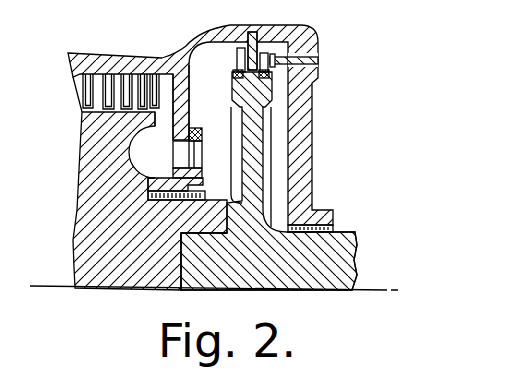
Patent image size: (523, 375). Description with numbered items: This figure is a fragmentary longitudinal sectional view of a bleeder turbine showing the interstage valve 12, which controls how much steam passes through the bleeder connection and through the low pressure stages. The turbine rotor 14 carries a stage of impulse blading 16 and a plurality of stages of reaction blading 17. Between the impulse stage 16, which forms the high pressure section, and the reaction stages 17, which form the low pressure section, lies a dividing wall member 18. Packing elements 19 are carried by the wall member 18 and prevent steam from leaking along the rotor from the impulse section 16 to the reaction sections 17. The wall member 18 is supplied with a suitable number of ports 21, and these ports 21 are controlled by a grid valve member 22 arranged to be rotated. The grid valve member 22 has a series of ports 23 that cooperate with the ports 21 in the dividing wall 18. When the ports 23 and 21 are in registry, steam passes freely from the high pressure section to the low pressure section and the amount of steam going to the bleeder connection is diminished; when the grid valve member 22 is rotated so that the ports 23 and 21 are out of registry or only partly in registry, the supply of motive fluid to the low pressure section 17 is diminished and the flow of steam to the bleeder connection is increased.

The interstage valve 12 is at (220, 127).
The turbine rotor 14 is at (337, 245).
The stage of impulse blading 16 is at (231, 70).
The stages of reaction blading 17 is at (154, 79).
The dividing wall member 18 is at (188, 97).
The packing elements 19 is at (205, 198).
The ports 21 is at (177, 150).
The grid valve member 22 is at (200, 131).
The ports 23 is at (192, 152).